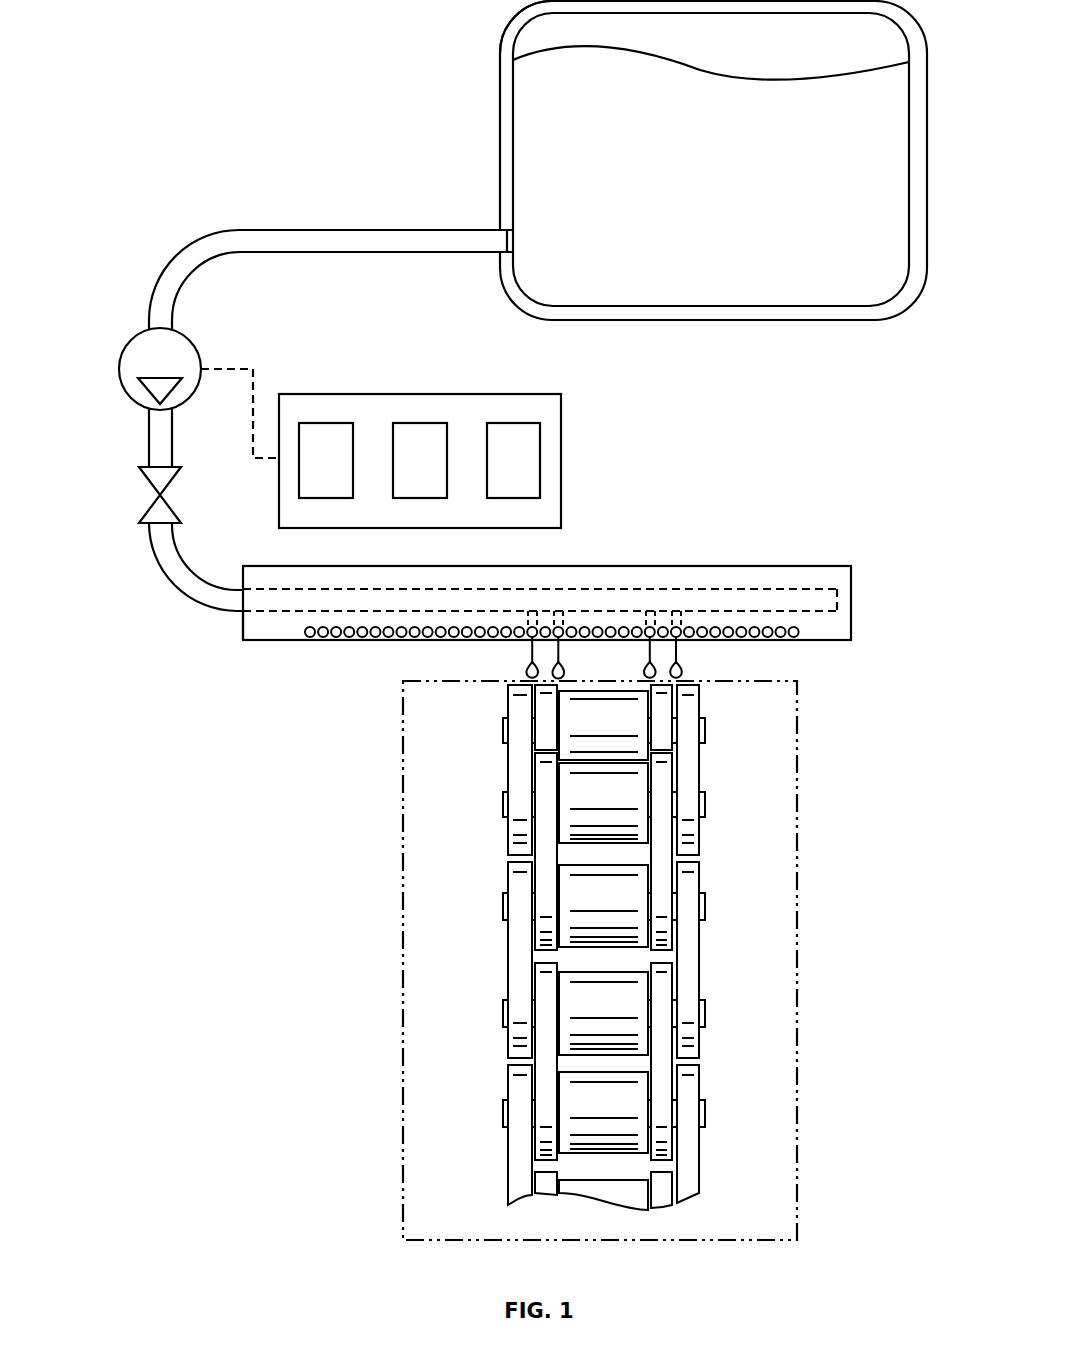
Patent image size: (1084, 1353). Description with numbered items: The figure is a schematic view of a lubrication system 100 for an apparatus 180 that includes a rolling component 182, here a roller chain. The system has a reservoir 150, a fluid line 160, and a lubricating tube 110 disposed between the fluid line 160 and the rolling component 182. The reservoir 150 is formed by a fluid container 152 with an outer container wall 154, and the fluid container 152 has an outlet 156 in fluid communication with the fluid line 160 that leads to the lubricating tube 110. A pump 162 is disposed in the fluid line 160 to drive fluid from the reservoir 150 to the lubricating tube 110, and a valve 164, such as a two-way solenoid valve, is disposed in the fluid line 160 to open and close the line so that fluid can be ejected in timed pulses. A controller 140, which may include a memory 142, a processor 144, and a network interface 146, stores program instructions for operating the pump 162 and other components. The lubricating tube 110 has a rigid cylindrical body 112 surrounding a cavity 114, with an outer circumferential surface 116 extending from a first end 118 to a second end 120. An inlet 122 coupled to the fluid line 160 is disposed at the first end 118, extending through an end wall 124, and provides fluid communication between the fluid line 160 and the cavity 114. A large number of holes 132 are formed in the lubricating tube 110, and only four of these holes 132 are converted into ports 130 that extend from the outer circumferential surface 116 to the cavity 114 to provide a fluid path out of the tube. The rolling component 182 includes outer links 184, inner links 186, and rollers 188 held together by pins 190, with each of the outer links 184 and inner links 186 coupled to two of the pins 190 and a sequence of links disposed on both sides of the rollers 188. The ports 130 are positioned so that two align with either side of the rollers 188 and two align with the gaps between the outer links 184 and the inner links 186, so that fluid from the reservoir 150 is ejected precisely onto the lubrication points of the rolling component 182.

The lubrication system 100 is at (232, 112).
The lubricating tube 110 is at (826, 534).
The rigid cylindrical body 112 is at (748, 578).
The cavity 114 is at (363, 598).
The outer circumferential surface 116 is at (680, 566).
The first end 118 is at (243, 680).
The second end 120 is at (847, 682).
The inlet 122 is at (190, 597).
The end wall 124 is at (242, 630).
The ports 130 is at (533, 592).
The holes 132 is at (438, 655).
The controller 140 is at (561, 431).
The memory 142 is at (330, 435).
The processor 144 is at (413, 435).
The network interface 146 is at (503, 435).
The reservoir 150 is at (466, 146).
The fluid container 152 is at (711, 120).
The outer container wall 154 is at (508, 72).
The outlet 156 is at (513, 231).
The fluid line 160 is at (200, 234).
The pump 162 is at (128, 370).
The valve 164 is at (153, 513).
The apparatus 180 is at (403, 851).
The rolling component 182 is at (660, 947).
The outer links 184 is at (757, 983).
The inner links 186 is at (465, 884).
The rollers 188 is at (598, 1004).
The pins 190 is at (705, 731).